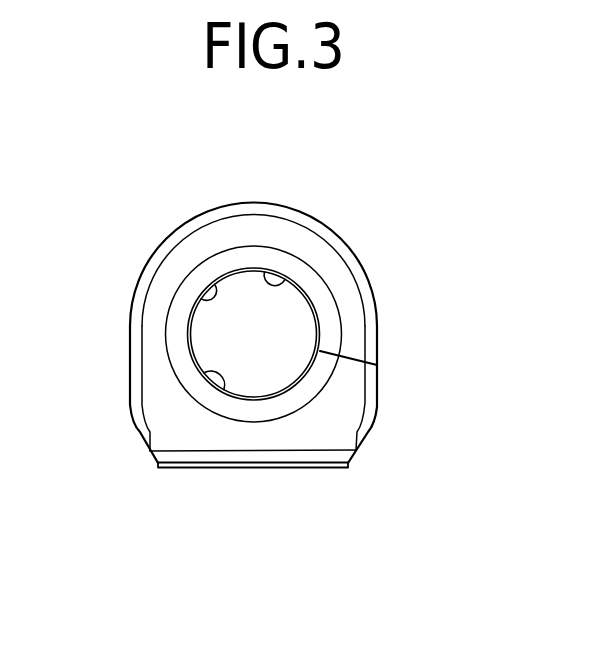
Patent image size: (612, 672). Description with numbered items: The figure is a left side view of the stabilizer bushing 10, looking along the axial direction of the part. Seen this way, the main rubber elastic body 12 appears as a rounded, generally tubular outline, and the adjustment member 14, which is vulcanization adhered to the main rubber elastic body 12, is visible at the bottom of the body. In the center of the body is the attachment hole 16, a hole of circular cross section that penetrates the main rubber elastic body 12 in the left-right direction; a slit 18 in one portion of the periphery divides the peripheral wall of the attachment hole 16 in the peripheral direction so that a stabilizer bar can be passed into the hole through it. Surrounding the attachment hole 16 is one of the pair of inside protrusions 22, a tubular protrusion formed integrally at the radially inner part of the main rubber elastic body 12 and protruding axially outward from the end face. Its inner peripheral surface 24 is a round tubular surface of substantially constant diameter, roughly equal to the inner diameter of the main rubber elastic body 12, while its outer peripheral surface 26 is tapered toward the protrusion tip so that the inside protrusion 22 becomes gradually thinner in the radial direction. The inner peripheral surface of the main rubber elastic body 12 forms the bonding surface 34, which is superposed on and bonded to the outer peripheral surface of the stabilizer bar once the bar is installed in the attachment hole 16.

The stabilizer bushing 10 is at (270, 350).
The main rubber elastic body 12 is at (367, 258).
The adjustment member 14 is at (310, 472).
The attachment hole 16 is at (209, 284).
The slit 18 is at (346, 358).
The inside protrusion 22 is at (170, 373).
The inner peripheral surface 24 is at (228, 392).
The outer peripheral surface 26 is at (175, 329).
The bonding surface 34 is at (257, 277).